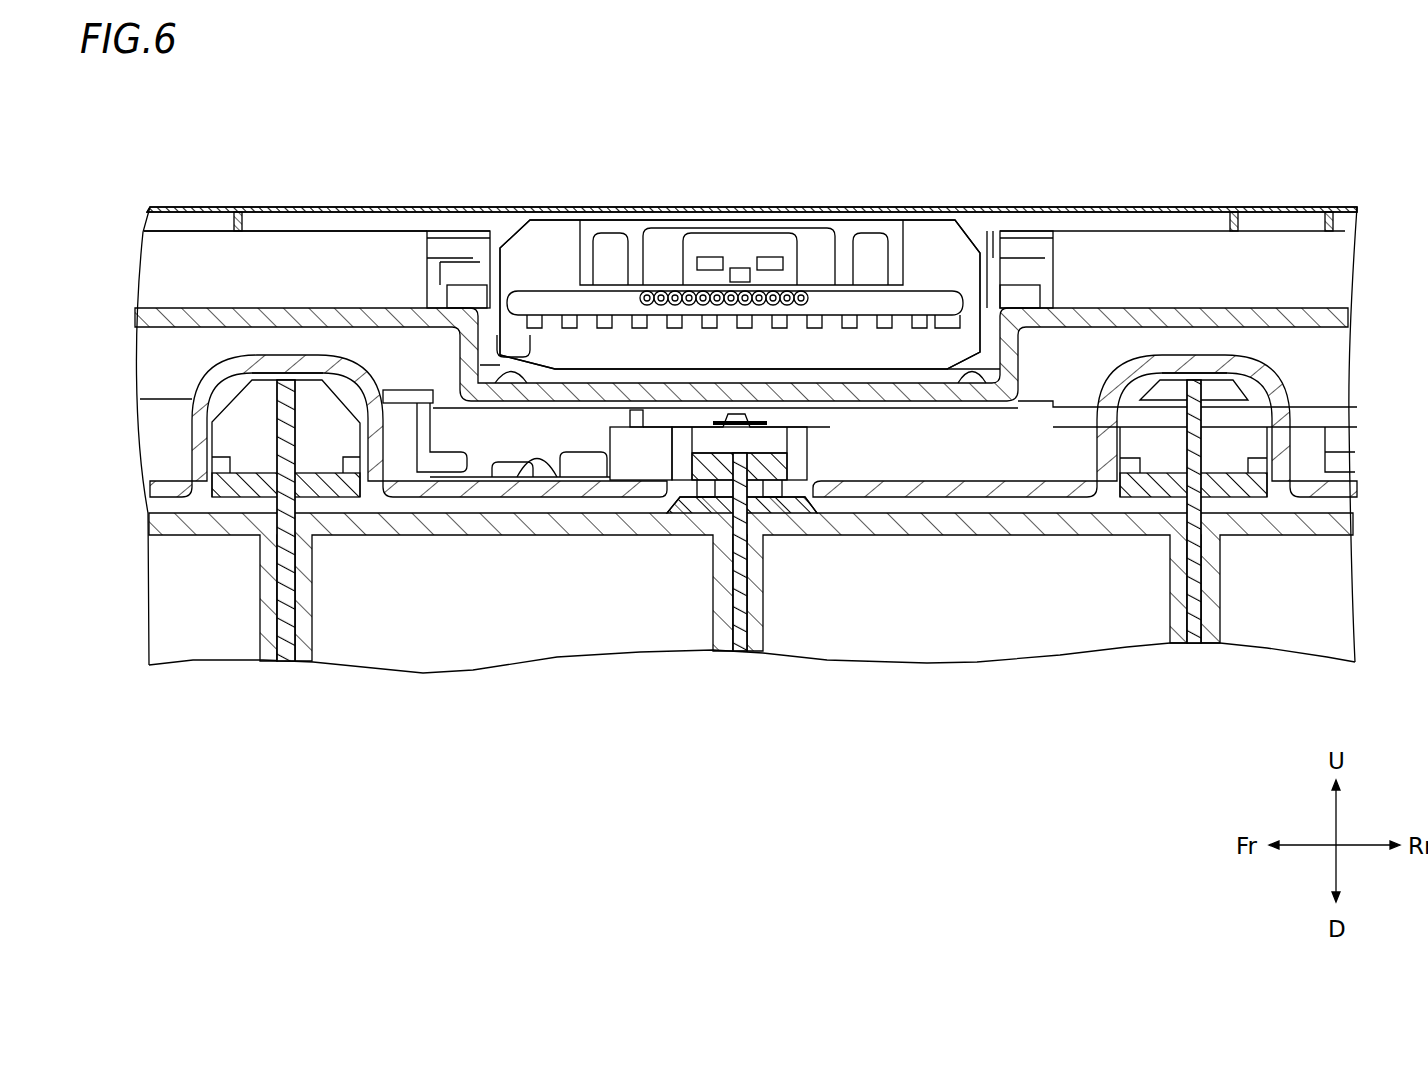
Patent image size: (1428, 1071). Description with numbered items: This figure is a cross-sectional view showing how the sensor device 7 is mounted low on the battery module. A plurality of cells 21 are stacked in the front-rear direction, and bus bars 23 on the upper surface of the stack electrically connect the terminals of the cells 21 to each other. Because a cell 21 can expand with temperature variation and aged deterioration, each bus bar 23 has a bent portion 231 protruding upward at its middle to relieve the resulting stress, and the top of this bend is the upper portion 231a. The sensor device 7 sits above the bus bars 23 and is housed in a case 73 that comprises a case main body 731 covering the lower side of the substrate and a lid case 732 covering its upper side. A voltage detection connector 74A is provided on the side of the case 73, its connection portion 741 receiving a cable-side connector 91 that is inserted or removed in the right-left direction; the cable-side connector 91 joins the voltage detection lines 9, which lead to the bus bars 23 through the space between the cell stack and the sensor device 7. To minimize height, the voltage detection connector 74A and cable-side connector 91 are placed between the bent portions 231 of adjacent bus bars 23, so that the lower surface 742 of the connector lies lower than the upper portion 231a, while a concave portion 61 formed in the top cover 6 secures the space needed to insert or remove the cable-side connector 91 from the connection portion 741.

The top cover 6 is at (1282, 308).
The concave portion 61 is at (965, 385).
The sensor device 7 is at (750, 171).
The case 73 is at (383, 199).
The case main body 731 is at (265, 272).
The lid case 732 is at (457, 207).
The voltage detection connector 74A is at (832, 248).
The connection portion 741 is at (992, 282).
The lower surface 742 is at (527, 357).
The voltage detection line 9 is at (848, 293).
The cable-side connector 91 is at (927, 243).
The cell 21 is at (193, 630).
The bus bar 23 is at (530, 450).
The bent portion 231 is at (192, 438).
The upper portion 231a is at (292, 352).